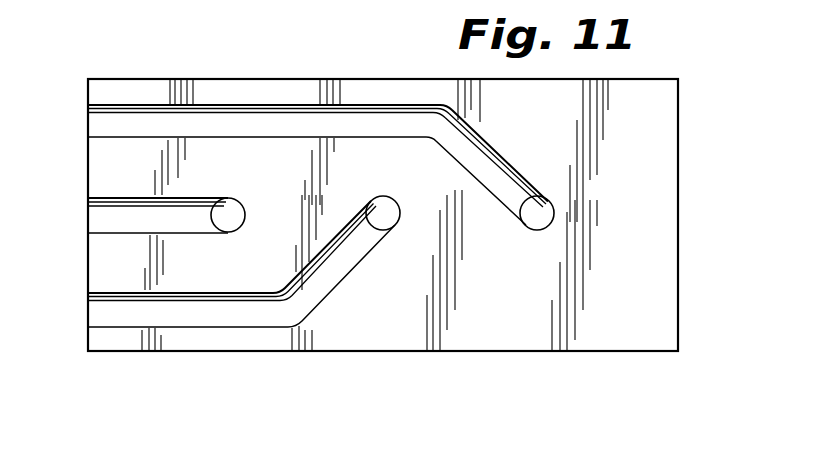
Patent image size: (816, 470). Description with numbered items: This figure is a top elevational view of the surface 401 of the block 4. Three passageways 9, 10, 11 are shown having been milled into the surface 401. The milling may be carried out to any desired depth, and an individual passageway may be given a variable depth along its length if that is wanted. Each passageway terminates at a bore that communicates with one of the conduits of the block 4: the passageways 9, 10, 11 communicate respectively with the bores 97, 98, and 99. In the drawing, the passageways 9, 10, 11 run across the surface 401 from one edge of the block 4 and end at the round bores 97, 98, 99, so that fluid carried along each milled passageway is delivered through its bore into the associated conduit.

The block 4 is at (637, 78).
The passageway 11 is at (93, 121).
The passageway 10 is at (93, 219).
The passageway 9 is at (93, 310).
The bore 98 is at (236, 209).
The bore 99 is at (390, 208).
The bore 97 is at (548, 214).
The surface 401 is at (519, 294).